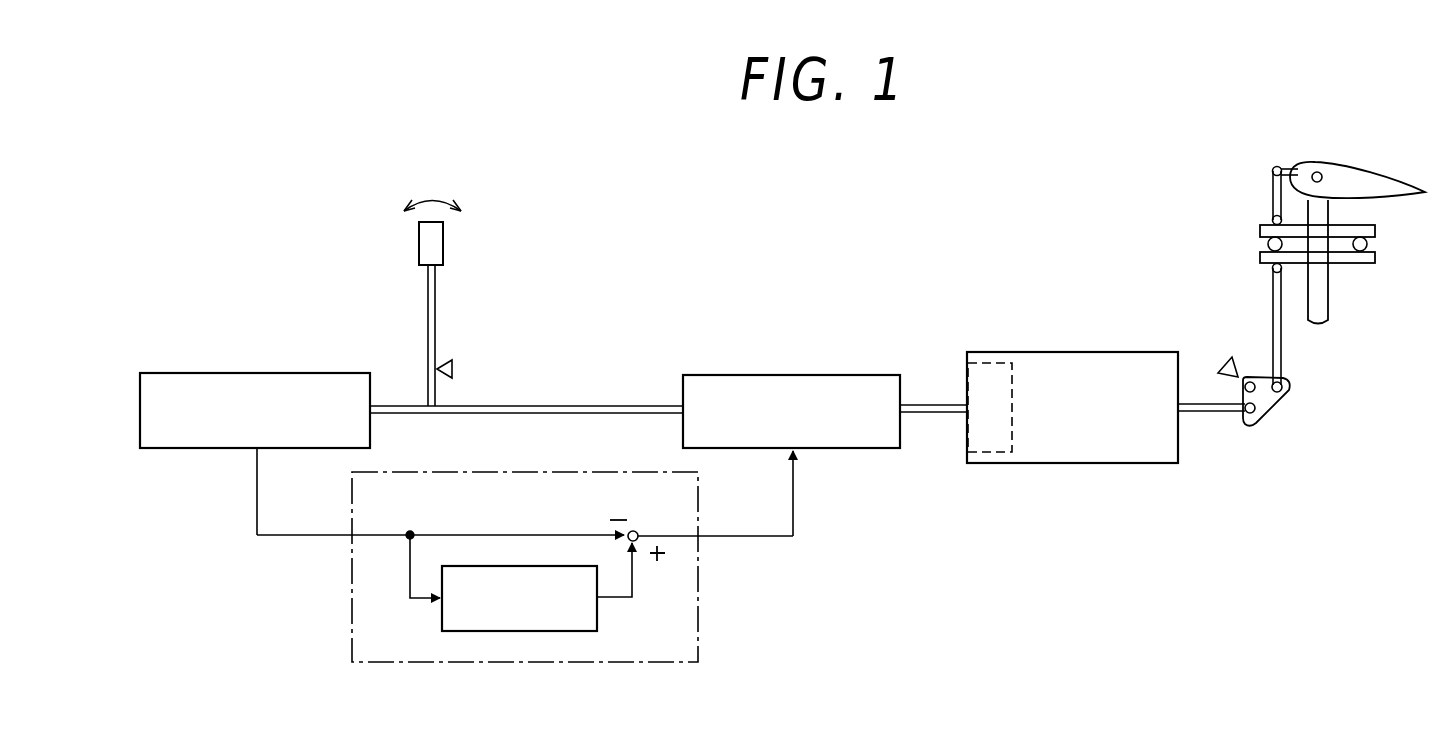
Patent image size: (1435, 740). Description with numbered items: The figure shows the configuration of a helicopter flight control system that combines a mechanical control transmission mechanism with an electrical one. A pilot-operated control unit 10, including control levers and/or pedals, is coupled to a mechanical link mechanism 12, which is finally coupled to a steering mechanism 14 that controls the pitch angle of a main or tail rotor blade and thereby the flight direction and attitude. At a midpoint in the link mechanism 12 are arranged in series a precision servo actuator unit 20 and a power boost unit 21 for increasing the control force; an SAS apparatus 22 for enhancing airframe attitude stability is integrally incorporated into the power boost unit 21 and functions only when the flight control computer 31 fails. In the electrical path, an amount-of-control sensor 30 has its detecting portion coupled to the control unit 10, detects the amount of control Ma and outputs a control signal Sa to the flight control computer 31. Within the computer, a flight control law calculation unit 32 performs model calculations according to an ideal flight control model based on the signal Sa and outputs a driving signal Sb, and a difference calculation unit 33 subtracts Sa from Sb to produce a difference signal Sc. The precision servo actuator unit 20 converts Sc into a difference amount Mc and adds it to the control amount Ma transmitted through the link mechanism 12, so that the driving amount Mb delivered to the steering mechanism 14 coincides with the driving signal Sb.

The control unit 10 is at (436, 235).
The mechanical link mechanism 12 is at (575, 406).
The steering mechanism 14 is at (1347, 147).
The precision servo actuator unit 20 is at (728, 372).
The power boost unit 21 is at (1071, 362).
The SAS apparatus 22 is at (990, 365).
The amount-of-control sensor 30 is at (183, 380).
The flight control computer 31 is at (365, 633).
The flight control law calculation unit 32 is at (514, 633).
The difference calculation unit 33 is at (637, 531).